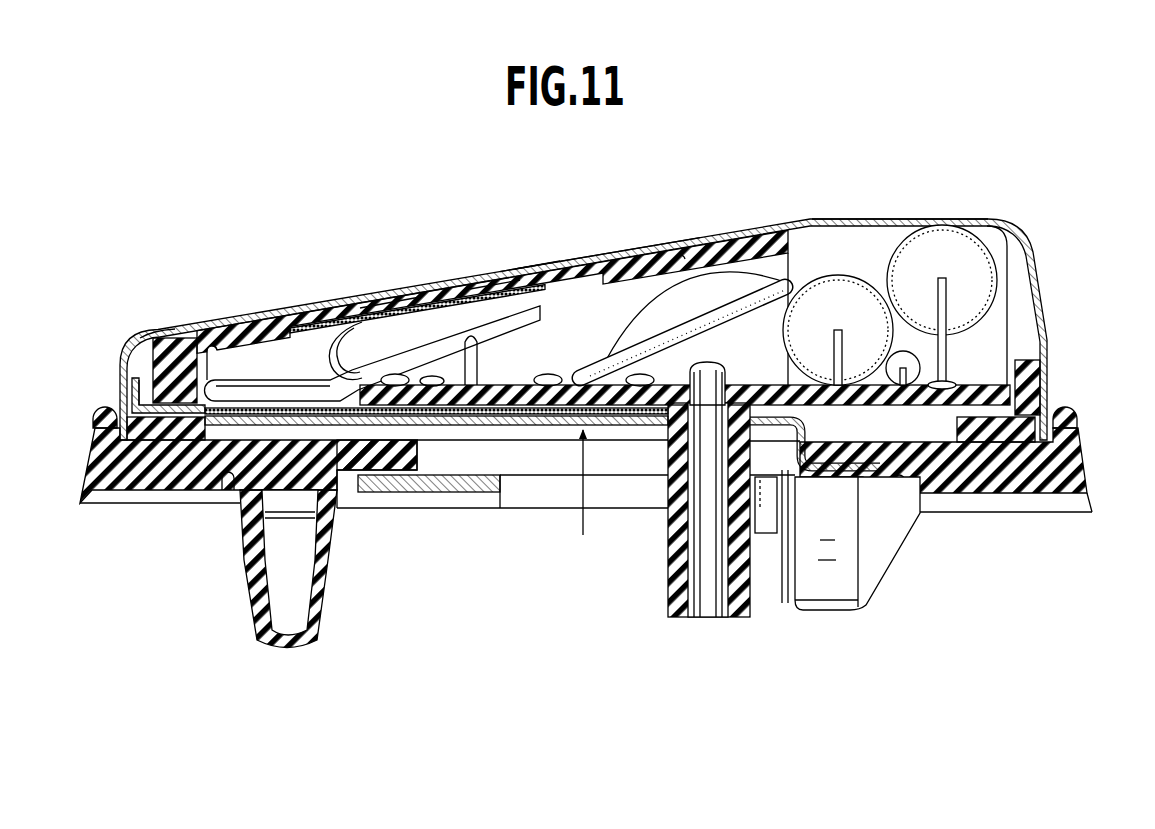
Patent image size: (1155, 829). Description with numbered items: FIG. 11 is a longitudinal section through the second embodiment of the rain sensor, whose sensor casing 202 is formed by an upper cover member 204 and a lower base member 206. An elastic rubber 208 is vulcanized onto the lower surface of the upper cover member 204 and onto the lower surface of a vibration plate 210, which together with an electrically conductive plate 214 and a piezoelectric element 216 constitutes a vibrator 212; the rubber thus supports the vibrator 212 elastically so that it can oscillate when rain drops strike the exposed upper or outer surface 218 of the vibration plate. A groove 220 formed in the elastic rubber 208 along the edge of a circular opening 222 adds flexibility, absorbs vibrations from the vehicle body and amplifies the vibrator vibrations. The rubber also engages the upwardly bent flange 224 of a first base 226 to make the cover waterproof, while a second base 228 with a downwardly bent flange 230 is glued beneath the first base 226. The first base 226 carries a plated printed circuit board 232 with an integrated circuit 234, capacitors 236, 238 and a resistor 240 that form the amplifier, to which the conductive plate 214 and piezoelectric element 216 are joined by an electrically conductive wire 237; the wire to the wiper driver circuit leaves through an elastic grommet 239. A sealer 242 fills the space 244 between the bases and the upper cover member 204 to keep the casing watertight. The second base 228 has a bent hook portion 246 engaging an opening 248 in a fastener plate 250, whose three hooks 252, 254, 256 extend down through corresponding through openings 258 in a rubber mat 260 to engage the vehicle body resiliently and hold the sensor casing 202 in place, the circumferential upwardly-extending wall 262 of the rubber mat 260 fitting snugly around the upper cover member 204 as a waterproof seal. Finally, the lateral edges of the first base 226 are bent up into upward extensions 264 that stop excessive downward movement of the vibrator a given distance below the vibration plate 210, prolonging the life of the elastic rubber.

The sensor casing 202 is at (947, 212).
The upper cover member 204 is at (864, 217).
The lower base member 206 is at (587, 498).
The elastic rubber 208 is at (640, 292).
The vibration plate 210 is at (495, 274).
The vibrator 212 is at (578, 255).
The electrically conductive plate 214 is at (390, 278).
The piezoelectric element 216 is at (417, 287).
The upper or outer surface 218 is at (536, 266).
The groove 220 is at (498, 278).
The circular opening 222 is at (156, 315).
The upwardly bent flange 224 is at (601, 412).
The first base 226 is at (373, 337).
The second base 228 is at (436, 477).
The downwardly bent flange 230 is at (639, 481).
The plated printed circuit board 232 is at (685, 465).
The integrated circuit 234 is at (705, 279).
The capacitor 236 is at (838, 307).
The electrically conductive wire 237 is at (381, 346).
The capacitor 238 is at (976, 293).
The elastic grommet 239 is at (673, 489).
The resistor 240 is at (945, 362).
The sealer 242 is at (591, 465).
The space 244 is at (122, 366).
The bent hook portion 246 is at (791, 557).
The opening 248 is at (429, 515).
The fastener plate 250 is at (377, 503).
The hook 252 is at (299, 590).
The hook 254 is at (874, 543).
The hook 256 is at (754, 576).
The through opening 258 is at (584, 525).
The rubber mat 260 is at (586, 531).
The circumferential upwardly-extending wall 262 is at (591, 414).
The upward extension 264 is at (478, 353).